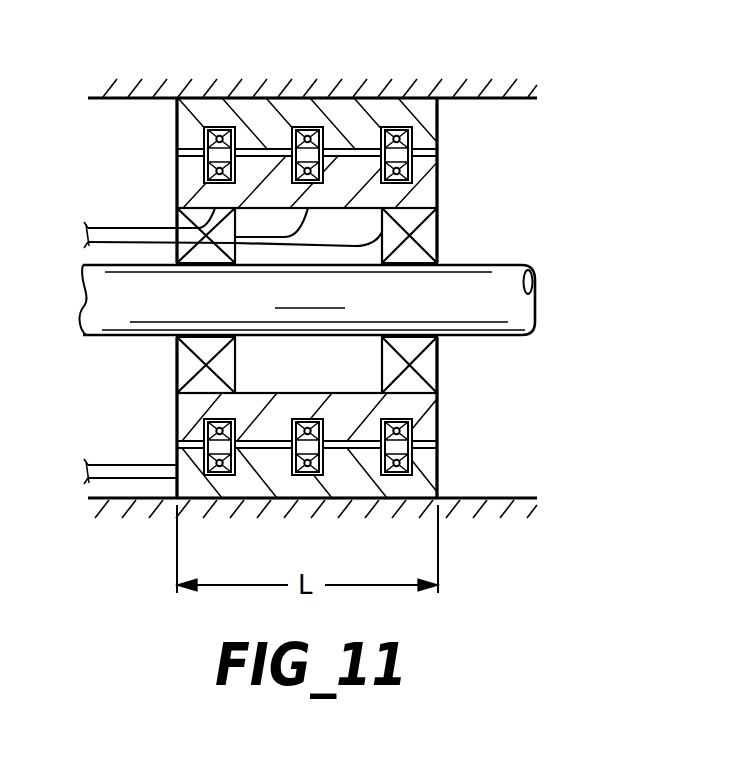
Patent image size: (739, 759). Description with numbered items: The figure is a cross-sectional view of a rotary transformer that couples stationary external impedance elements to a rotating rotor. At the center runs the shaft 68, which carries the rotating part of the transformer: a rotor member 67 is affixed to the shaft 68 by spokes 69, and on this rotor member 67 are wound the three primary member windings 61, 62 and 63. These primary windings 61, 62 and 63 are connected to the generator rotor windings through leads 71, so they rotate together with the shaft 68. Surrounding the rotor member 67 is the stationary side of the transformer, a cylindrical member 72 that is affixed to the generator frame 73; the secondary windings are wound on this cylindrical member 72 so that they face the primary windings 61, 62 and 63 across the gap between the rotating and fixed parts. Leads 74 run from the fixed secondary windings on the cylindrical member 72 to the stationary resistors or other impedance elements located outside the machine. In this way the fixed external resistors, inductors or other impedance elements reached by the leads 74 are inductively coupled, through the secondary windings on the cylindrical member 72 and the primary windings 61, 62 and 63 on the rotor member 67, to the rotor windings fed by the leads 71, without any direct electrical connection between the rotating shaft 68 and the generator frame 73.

The primary member winding 61 is at (215, 127).
The primary member winding 62 is at (306, 127).
The primary member winding 63 is at (398, 127).
The rotor member 67 is at (428, 425).
The shaft 68 is at (443, 285).
The spokes 69 is at (428, 357).
The leads 71 is at (128, 232).
The cylindrical member 72 is at (430, 122).
The generator frame 73 is at (467, 88).
The leads 74 is at (125, 468).